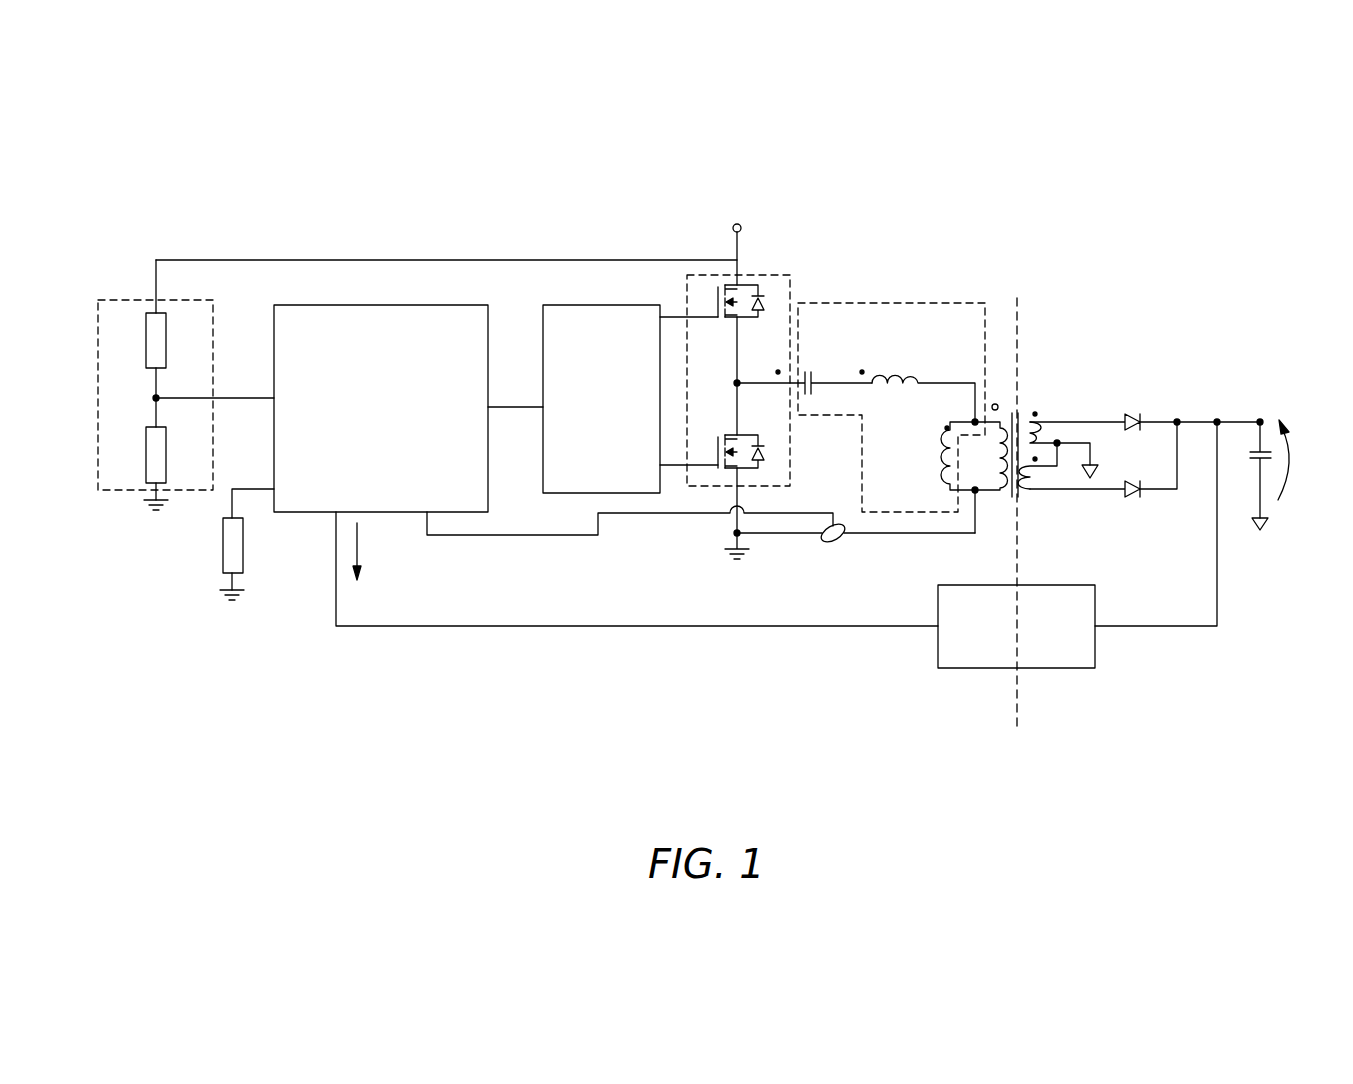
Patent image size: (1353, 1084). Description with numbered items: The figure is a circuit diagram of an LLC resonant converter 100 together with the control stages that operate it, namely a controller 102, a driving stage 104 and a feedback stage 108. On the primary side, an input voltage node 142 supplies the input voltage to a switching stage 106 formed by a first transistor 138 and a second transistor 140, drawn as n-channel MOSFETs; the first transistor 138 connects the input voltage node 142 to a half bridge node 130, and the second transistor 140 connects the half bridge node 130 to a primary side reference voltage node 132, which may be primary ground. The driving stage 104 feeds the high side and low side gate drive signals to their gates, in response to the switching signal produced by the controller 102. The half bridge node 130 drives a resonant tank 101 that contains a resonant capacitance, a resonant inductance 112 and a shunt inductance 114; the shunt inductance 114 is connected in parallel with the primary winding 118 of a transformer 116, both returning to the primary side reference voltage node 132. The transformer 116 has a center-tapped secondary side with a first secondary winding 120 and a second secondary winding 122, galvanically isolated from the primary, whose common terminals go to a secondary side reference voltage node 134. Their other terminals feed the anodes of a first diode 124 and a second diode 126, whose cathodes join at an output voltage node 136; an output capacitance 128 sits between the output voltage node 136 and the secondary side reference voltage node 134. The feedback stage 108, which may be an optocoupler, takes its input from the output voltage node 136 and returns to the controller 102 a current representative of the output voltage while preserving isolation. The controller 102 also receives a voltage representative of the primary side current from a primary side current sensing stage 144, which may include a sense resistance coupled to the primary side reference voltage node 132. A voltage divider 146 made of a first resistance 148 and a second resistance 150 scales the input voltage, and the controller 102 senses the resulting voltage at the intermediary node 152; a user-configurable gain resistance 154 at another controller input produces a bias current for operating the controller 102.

The LLC resonant converter 100 is at (1165, 213).
The resonant tank 101 is at (872, 402).
The controller 102 is at (366, 305).
The driving stage 104 is at (586, 305).
The switching stage 106 is at (765, 388).
The feedback stage 108 is at (1052, 585).
The resonant inductance 112 is at (920, 374).
The shunt inductance 114 is at (945, 460).
The transformer 116 is at (1030, 377).
The primary winding 118 is at (1000, 468).
The first secondary winding 120 is at (1040, 430).
The second secondary winding 122 is at (1040, 479).
The first diode 124 is at (1134, 412).
The second diode 126 is at (1134, 500).
The output capacitance 128 is at (1256, 459).
The half bridge node 130 is at (740, 386).
The primary side reference voltage node 132 is at (160, 503).
The secondary side reference voltage node 134 is at (1097, 468).
The output voltage node 136 is at (1261, 420).
The first transistor 138 is at (744, 317).
The second transistor 140 is at (758, 468).
The input voltage node 142 is at (738, 224).
The primary side current sensing stage 144 is at (843, 540).
The voltage divider 146 is at (122, 300).
The first resistance 148 is at (146, 352).
The second resistance 150 is at (146, 440).
The intermediary node 152 is at (158, 397).
The gain resistance 154 is at (223, 548).